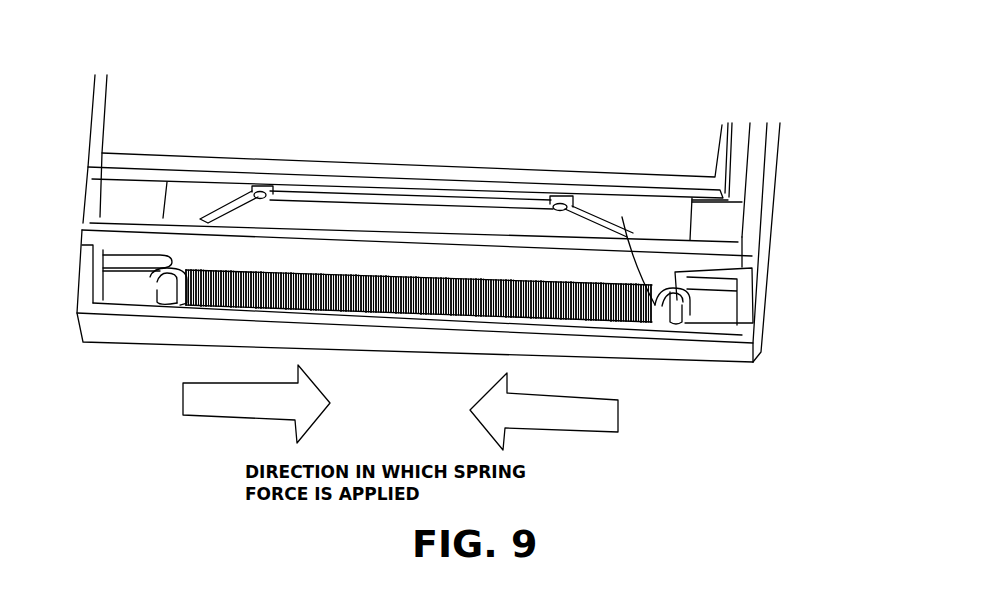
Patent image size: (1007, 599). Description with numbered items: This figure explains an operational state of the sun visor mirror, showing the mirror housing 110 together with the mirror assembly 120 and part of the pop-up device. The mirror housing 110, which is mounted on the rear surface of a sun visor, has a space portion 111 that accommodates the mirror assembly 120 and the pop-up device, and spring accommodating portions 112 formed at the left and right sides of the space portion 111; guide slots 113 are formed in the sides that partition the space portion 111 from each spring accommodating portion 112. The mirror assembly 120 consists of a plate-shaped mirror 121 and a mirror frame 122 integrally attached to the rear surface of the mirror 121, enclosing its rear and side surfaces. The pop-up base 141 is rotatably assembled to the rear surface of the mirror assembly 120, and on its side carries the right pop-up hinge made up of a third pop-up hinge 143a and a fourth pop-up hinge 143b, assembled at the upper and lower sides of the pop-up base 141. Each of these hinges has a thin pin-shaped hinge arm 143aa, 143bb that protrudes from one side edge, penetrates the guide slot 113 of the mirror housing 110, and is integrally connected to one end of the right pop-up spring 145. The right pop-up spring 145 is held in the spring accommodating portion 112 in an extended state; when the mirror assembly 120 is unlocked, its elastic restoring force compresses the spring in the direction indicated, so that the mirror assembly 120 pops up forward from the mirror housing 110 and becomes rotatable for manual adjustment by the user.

The mirror housing 110 is at (768, 196).
The space portion 111 is at (723, 223).
The spring accommodating portion 112 is at (730, 309).
The guide slot 113 is at (703, 265).
The mirror assembly 120 is at (668, 46).
The mirror 121 is at (598, 128).
The mirror frame 122 is at (716, 147).
The pop-up base 141 is at (305, 187).
The third pop-up hinge 143a is at (683, 305).
The hinge arm 143aa is at (658, 325).
The fourth pop-up hinge 143b is at (193, 187).
The hinge arm 143bb is at (160, 293).
The right pop-up spring 145 is at (443, 298).